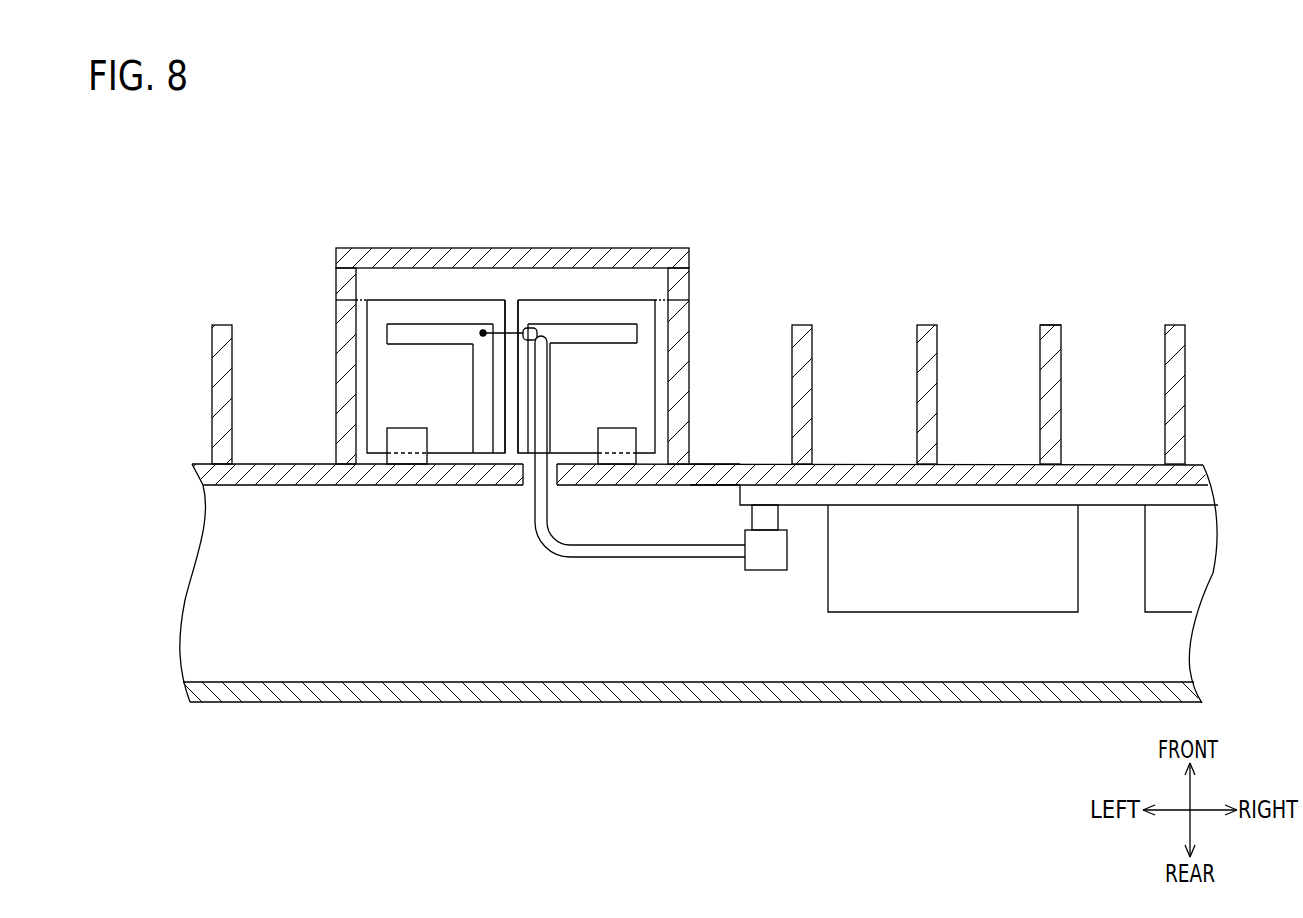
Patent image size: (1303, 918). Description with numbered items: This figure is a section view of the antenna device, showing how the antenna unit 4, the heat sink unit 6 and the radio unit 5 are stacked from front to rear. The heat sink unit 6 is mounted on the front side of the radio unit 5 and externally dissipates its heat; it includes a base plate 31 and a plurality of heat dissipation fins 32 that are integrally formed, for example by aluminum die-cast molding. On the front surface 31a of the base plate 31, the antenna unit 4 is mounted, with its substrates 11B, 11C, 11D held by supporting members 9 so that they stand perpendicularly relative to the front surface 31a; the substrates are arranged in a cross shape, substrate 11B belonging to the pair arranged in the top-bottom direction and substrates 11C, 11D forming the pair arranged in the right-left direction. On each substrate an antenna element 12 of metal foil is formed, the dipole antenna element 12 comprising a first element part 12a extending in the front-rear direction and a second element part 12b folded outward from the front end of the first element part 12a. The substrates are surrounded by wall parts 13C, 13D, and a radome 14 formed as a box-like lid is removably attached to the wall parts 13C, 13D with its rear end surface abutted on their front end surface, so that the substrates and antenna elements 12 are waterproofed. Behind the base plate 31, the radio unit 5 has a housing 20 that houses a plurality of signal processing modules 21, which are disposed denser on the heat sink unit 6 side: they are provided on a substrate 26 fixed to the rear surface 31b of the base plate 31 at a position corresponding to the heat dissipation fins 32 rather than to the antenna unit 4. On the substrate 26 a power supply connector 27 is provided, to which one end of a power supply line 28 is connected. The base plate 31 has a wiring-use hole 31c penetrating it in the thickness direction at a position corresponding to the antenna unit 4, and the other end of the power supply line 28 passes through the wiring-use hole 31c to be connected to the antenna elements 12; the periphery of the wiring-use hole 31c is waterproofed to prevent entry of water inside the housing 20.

The antenna unit 4 is at (510, 332).
The radio unit 5 is at (710, 703).
The heat sink unit 6 is at (1050, 323).
The supporting member 9 is at (405, 455).
The substrate 11B is at (512, 310).
The substrate 11C is at (407, 310).
The substrate 11D is at (617, 310).
The antenna element 12 is at (511, 329).
The first element part 12a is at (417, 336).
The second element part 12b is at (483, 413).
The wall part 13C is at (345, 318).
The wall part 13D is at (690, 318).
The radome 14 is at (675, 253).
The housing 20 is at (598, 695).
The signal processing module 21 is at (963, 595).
The substrate 26 is at (1110, 497).
The power supply connector 27 is at (765, 557).
The power supply line 28 is at (600, 558).
The base plate 31 is at (280, 478).
The front surface 31a is at (712, 464).
The rear surface 31b is at (715, 487).
The wiring-use hole 31c is at (528, 490).
The heat dissipation fin 32 is at (225, 358).